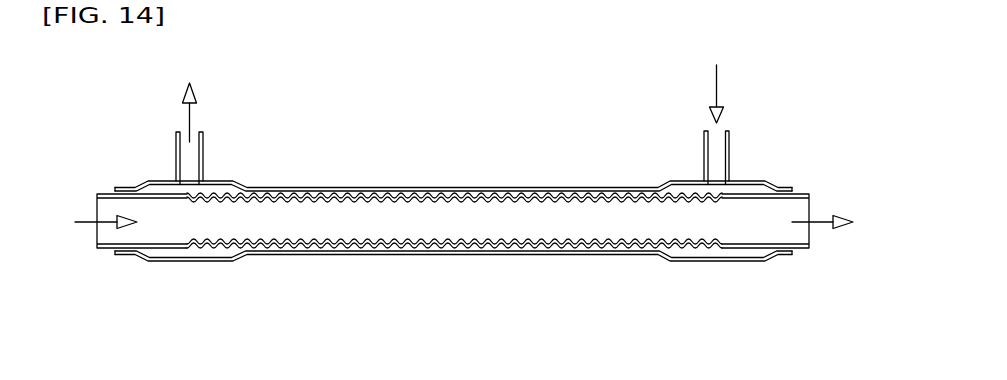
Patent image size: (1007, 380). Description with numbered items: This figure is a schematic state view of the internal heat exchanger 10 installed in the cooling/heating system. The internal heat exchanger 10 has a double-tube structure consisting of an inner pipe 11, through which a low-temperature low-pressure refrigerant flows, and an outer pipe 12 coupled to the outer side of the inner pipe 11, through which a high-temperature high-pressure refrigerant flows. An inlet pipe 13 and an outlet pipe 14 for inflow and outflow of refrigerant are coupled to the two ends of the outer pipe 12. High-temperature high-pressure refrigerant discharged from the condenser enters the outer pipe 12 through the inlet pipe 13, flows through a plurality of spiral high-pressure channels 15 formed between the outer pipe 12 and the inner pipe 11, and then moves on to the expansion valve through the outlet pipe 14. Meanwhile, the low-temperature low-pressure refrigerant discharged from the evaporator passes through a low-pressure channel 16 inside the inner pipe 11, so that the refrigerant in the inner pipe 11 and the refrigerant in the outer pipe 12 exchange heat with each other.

The internal heat exchanger 10 is at (622, 168).
The inner pipe 11 is at (372, 245).
The outer pipe 12 is at (362, 190).
The inlet pipe 13 is at (728, 150).
The outlet pipe 14 is at (200, 147).
The spiral high-pressure channel 15 is at (332, 190).
The low-pressure channel 16 is at (337, 225).